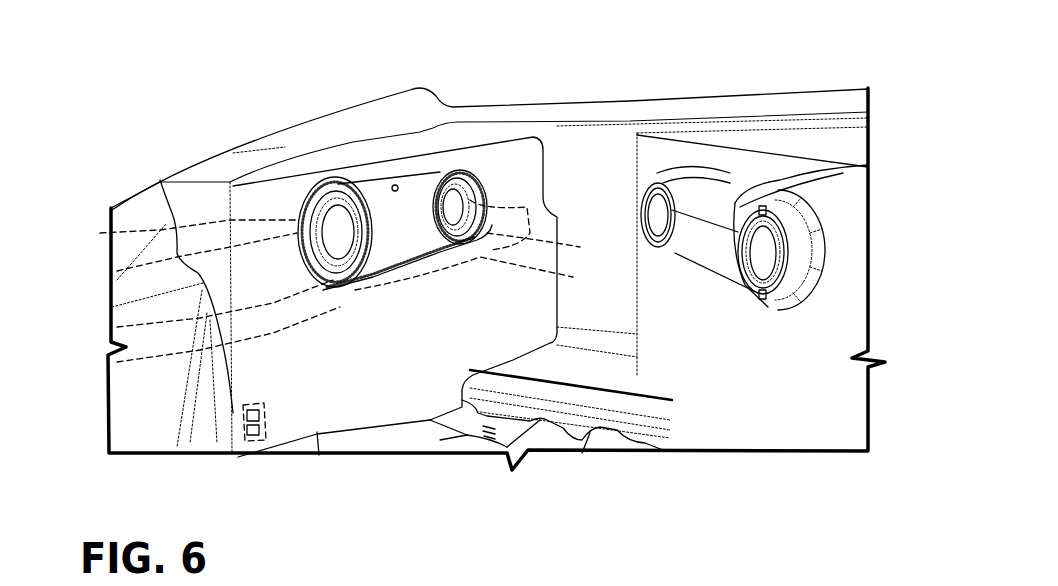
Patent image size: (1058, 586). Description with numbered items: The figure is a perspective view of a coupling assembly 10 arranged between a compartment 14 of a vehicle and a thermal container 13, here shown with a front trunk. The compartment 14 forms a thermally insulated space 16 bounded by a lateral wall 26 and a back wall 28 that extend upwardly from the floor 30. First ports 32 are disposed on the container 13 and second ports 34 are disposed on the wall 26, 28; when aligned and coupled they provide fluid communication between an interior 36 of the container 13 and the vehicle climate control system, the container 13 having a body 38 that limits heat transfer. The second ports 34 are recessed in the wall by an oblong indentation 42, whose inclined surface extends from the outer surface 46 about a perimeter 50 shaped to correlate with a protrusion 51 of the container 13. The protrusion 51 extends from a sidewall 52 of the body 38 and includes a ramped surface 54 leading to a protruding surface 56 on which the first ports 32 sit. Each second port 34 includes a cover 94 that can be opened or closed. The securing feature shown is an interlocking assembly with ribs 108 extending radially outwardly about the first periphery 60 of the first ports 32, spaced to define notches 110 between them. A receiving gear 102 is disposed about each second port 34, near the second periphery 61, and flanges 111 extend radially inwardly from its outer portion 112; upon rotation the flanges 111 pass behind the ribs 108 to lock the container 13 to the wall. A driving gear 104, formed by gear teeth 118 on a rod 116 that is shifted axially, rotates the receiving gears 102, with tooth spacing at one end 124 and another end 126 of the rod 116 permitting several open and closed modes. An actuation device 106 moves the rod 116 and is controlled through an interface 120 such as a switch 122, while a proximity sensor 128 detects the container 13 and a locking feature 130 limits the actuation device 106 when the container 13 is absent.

The coupling assembly 10 is at (662, 83).
The thermal container 13 is at (795, 147).
The compartment 14 is at (397, 90).
The thermally insulated space 16 is at (568, 372).
The lateral wall 26 is at (305, 195).
The back wall 28 is at (553, 140).
The floor 30 is at (593, 437).
The first ports 32 is at (672, 252).
The second ports 34 is at (440, 183).
The interior 36 is at (790, 414).
The body 38 is at (673, 140).
The indentation 42 is at (410, 240).
The outer surface 46 is at (300, 388).
The perimeter 50 is at (557, 187).
The protrusion 51 is at (777, 302).
The sidewall 52 is at (758, 292).
The ramped surface 54 is at (817, 265).
The protruding surface 56 is at (713, 208).
The first periphery 60 is at (787, 243).
The second periphery 61 is at (493, 180).
The cover 94 is at (252, 202).
The receiving gear 102 is at (383, 200).
The driving gear 104 is at (437, 258).
The actuation device 106 is at (557, 200).
The ribs 108 is at (680, 210).
The notches 110 is at (375, 215).
The flanges 111 is at (393, 184).
The outer portion 112 is at (422, 262).
The rod 116 is at (388, 283).
The gear teeth 118 is at (403, 280).
The interface 120 is at (232, 421).
The switch 122 is at (250, 410).
The one end 124 is at (111, 335).
The another end 126 is at (573, 277).
The proximity sensor 128 is at (400, 205).
The locking feature 130 is at (580, 247).